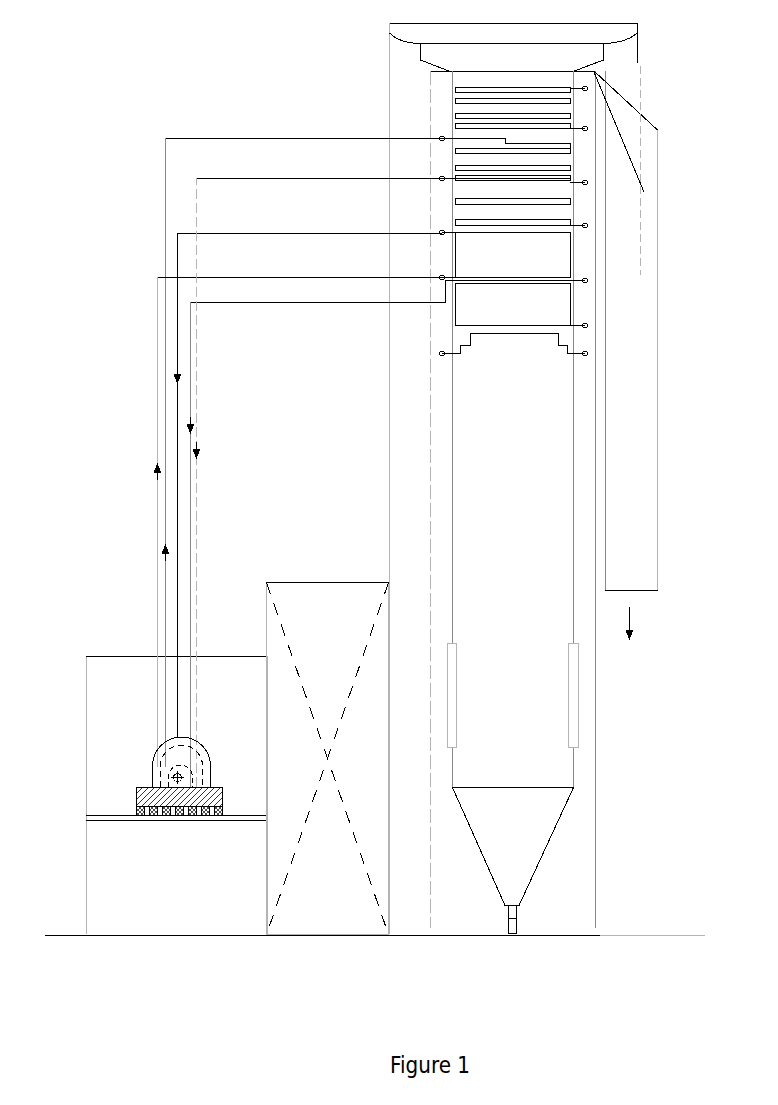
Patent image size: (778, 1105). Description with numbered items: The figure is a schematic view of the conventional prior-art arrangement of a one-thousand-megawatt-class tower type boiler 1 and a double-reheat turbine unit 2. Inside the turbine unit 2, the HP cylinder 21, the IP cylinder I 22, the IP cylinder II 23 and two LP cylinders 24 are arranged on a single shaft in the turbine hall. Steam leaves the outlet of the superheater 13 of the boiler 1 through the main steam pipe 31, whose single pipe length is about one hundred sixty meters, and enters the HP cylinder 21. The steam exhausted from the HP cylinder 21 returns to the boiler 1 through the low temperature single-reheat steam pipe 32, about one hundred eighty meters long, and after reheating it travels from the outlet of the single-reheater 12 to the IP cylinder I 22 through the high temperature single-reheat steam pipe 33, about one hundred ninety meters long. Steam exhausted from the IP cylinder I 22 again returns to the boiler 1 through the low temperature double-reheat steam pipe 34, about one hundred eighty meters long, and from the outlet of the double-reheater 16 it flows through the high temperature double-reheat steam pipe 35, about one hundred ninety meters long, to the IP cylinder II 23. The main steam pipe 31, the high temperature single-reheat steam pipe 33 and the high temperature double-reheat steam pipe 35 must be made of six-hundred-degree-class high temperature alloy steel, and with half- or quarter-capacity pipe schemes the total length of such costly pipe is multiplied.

The tower type boiler 1 is at (590, 719).
The single-reheater 12 is at (553, 157).
The double-reheater 16 is at (553, 258).
The superheater 13 is at (553, 300).
The double-reheat turbine unit 2 is at (200, 818).
The HP cylinder 21 is at (160, 780).
The IP cylinder I 22 is at (152, 768).
The IP cylinder II 23 is at (150, 757).
The LP cylinders 24 is at (155, 743).
The main steam pipe 31 is at (260, 303).
The low temperature single-reheat steam pipe 32 is at (165, 180).
The high temperature single-reheat steam pipe 33 is at (201, 392).
The low temperature double-reheat steam pipe 34 is at (157, 405).
The high temperature double-reheat steam pipe 35 is at (177, 250).